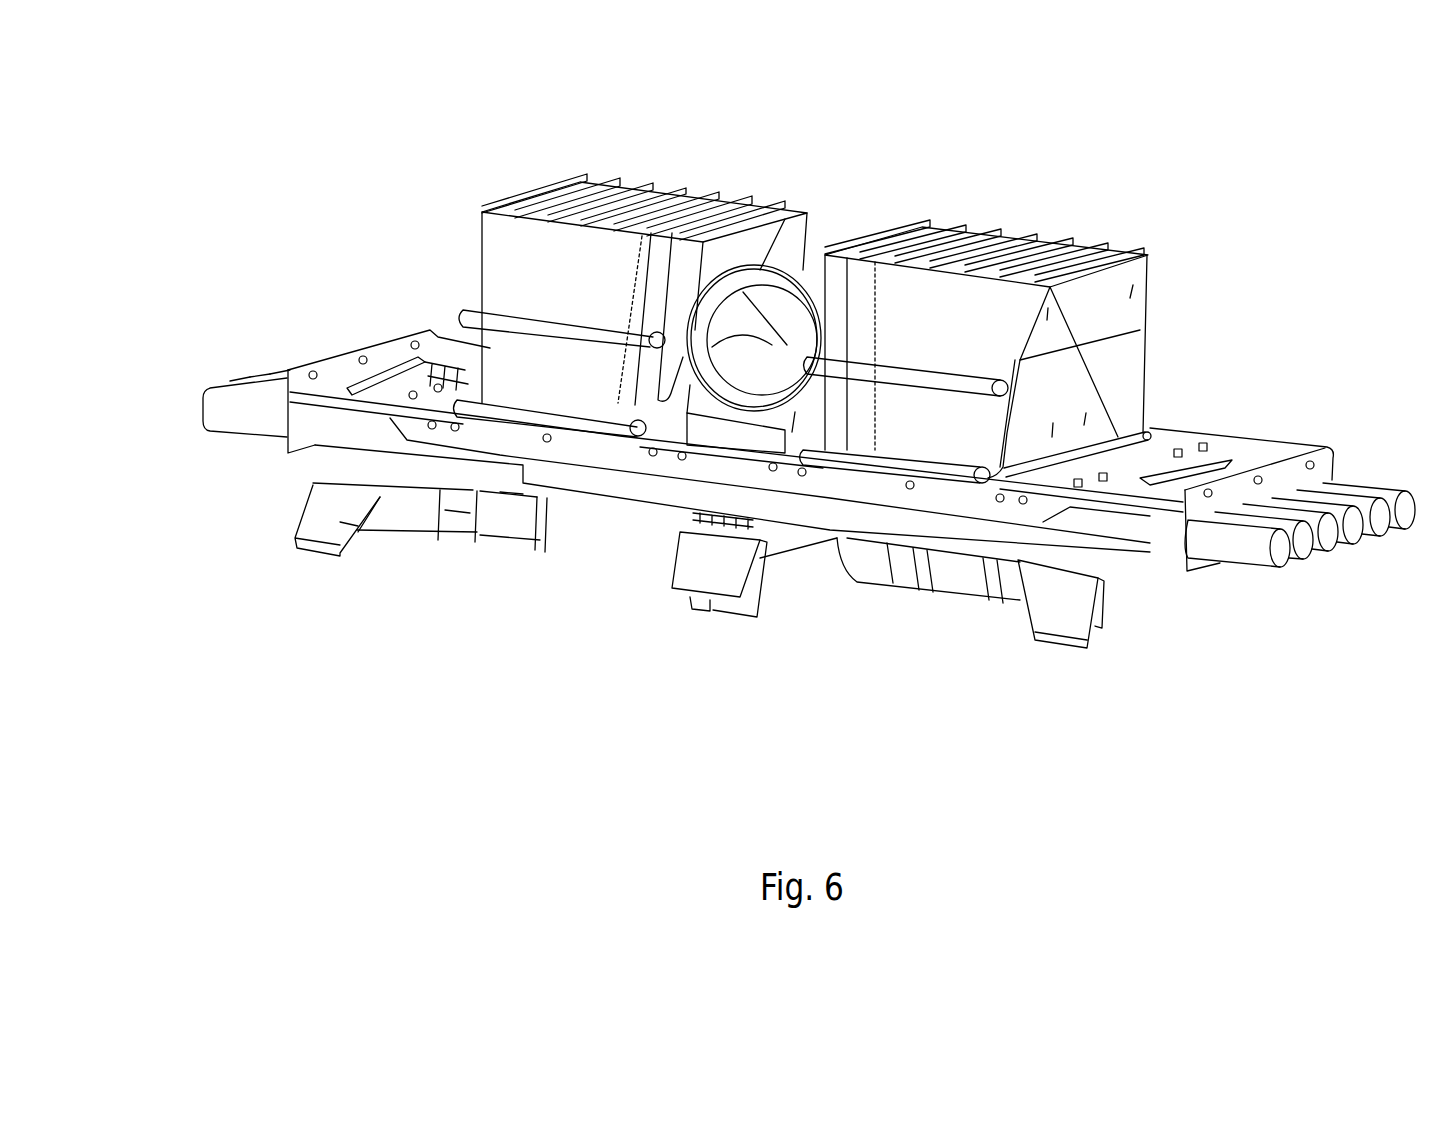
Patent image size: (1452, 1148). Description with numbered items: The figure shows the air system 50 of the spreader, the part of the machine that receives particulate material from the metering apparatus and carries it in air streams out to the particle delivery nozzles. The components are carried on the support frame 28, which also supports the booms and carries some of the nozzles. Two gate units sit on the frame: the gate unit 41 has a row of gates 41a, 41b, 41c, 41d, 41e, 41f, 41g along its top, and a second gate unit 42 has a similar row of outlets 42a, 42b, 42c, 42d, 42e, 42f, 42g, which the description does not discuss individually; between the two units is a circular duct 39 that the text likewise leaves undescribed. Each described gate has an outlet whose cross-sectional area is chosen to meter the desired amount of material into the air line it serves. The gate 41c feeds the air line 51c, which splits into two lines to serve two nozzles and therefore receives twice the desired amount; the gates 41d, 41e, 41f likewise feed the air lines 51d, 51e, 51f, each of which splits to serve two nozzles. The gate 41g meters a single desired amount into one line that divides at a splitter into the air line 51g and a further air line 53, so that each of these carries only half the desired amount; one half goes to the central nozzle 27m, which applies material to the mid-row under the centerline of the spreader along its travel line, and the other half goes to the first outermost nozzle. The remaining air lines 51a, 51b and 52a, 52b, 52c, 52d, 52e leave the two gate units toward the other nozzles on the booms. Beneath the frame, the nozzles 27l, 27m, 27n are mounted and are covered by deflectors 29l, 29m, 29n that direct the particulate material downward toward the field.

The air system 50 is at (821, 645).
The air line 53 is at (780, 542).
The support frame 28 is at (1228, 440).
The duct 39 is at (700, 362).
The gate 41 is at (1103, 358).
The divider plate 41a is at (860, 245).
The divider plate 41b is at (902, 242).
The gate 41c is at (948, 240).
The gate 41d is at (990, 242).
The gate 41e is at (1028, 247).
The gate 41f is at (1067, 250).
The gate 41g is at (1112, 253).
The left hopper 42 is at (513, 267).
The divider plate 42a is at (758, 207).
The divider plate 42b is at (713, 203).
The divider plate 42c is at (675, 203).
The divider plate 42d is at (635, 200).
The divider plate 42e is at (597, 200).
The divider plate 42f is at (550, 200).
The divider plate 42g is at (513, 202).
The outlet tube 51a is at (947, 580).
The outlet tube 51b is at (1282, 567).
The air line 51c is at (1303, 560).
The air line 51d is at (1325, 552).
The air line 51e is at (1350, 545).
The air line 51f is at (1378, 537).
The air line 51g is at (1405, 530).
The outlet tube 52a is at (500, 522).
The outlet tube 52b is at (212, 408).
The outlet tube 52c is at (245, 385).
The outlet tube 52d is at (265, 380).
The outlet tube 52e is at (290, 372).
The deflector 29l is at (1060, 632).
The deflector 29m is at (707, 583).
The deflector 29n is at (320, 533).
The particle delivery nozzle 27l is at (1103, 633).
The central nozzle 27m is at (747, 577).
The particle delivery nozzle 27n is at (357, 530).